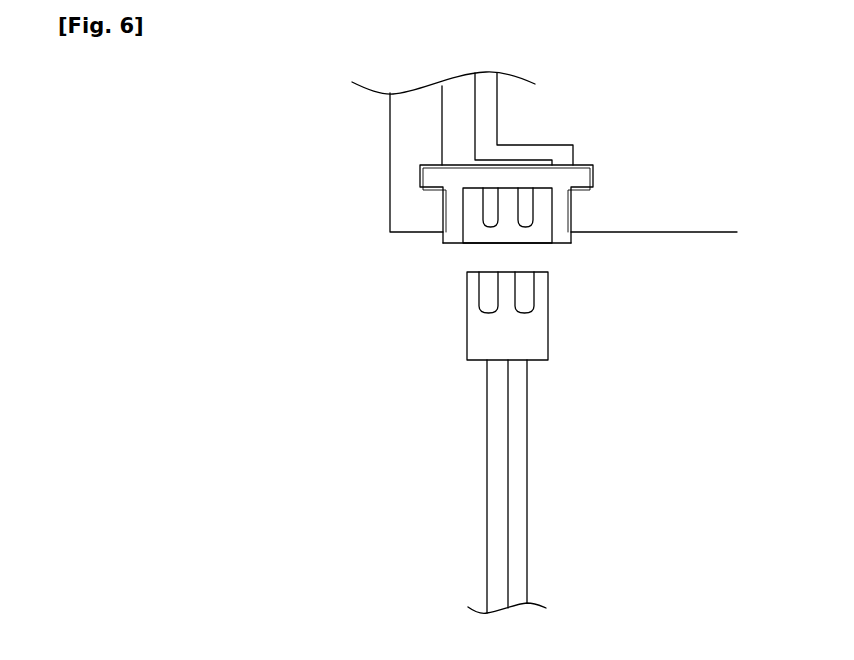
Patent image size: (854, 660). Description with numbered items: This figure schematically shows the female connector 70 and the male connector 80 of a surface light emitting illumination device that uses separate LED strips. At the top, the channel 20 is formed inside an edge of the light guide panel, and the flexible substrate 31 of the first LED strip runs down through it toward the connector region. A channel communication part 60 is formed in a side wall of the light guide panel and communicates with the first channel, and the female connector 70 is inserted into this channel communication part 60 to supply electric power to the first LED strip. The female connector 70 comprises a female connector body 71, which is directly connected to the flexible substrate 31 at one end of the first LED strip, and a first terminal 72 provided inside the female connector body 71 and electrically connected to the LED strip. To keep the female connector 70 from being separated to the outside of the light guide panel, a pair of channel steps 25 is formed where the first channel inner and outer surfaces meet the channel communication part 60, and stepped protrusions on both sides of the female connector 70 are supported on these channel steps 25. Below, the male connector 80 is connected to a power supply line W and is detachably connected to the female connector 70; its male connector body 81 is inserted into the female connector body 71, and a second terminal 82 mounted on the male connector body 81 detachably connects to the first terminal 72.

The channel 20 is at (444, 121).
The channel step 25 is at (420, 175).
The flexible substrate 31 is at (478, 110).
The channel communication part 60 is at (575, 206).
The female connector 70 is at (464, 274).
The female connector body 71 is at (455, 217).
The first terminal 72 is at (488, 220).
The male connector 80 is at (573, 317).
The male connector body 81 is at (542, 335).
The second terminal 82 is at (535, 291).
The power supply line W is at (520, 480).